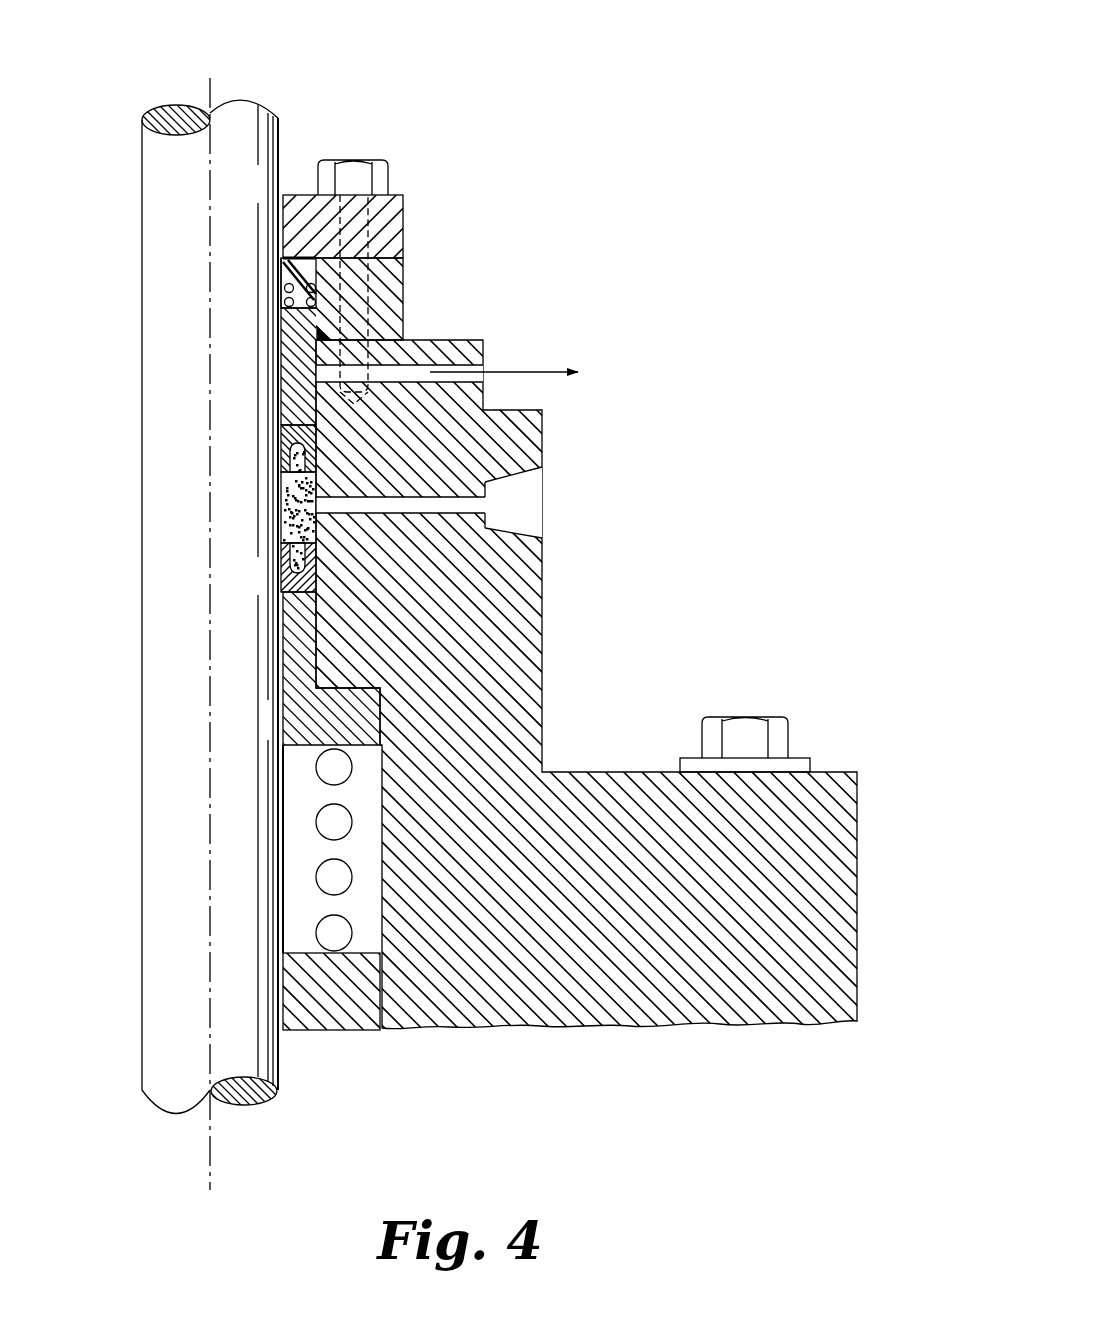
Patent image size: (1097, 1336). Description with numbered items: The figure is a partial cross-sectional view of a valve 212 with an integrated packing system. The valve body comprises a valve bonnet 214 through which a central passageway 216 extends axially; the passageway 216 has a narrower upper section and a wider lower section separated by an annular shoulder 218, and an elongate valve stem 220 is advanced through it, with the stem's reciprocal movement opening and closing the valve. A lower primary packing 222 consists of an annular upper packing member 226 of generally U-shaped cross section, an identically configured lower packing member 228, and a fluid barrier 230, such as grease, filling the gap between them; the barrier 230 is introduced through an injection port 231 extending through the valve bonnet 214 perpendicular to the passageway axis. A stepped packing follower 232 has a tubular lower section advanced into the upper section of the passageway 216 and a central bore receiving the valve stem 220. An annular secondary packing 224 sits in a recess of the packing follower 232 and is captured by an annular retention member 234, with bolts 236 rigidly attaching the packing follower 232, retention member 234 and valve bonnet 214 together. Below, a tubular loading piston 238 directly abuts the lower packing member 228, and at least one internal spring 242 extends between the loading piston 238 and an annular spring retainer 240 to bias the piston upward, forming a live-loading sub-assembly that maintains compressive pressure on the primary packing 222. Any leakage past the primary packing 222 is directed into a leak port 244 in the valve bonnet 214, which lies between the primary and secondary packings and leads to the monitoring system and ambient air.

The valve 212 is at (285, 560).
The valve bonnet 214 is at (548, 701).
The central passageway 216 is at (378, 826).
The annular shoulder 218 is at (363, 694).
The valve stem 220 is at (155, 150).
The primary packing 222 is at (240, 545).
The secondary packing 224 is at (281, 266).
The upper packing member 226 is at (281, 442).
The lower packing member 228 is at (281, 578).
The fluid barrier 230 is at (290, 508).
The injection port 231 is at (452, 505).
The packing follower 232 is at (402, 286).
The retention member 234 is at (393, 213).
The bolts 236 is at (388, 178).
The loading piston 238 is at (283, 672).
The spring retainer 240 is at (338, 1012).
The internal spring 242 is at (318, 877).
The leak port 244 is at (478, 368).